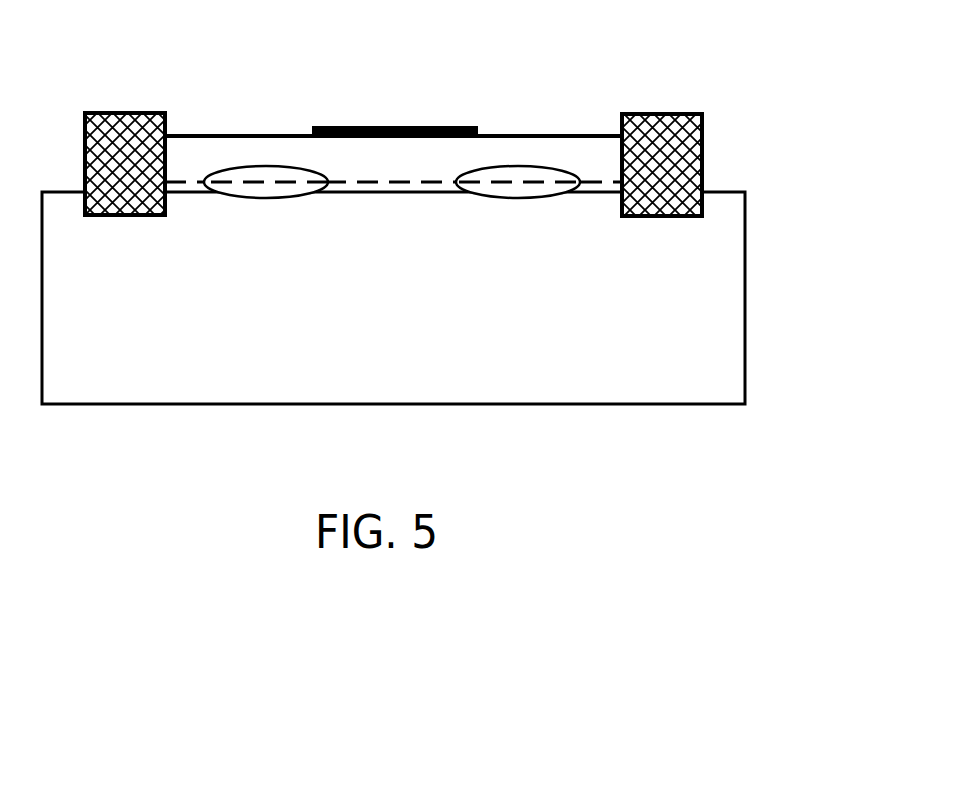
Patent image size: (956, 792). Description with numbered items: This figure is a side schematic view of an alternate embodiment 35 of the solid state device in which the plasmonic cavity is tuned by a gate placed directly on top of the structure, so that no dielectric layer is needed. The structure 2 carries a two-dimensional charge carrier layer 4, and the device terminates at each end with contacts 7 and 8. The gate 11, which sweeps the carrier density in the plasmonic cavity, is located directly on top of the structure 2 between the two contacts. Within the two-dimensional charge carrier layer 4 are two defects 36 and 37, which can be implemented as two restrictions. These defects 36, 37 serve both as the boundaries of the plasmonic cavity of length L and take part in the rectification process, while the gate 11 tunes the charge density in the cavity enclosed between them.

The structure 2 is at (132, 393).
The two-dimensional charge carrier layer 4 is at (395, 183).
The contact 7 is at (113, 133).
The contact 8 is at (655, 143).
The top gate 11 is at (398, 127).
The embodiment 35 is at (740, 120).
The defect 36 is at (260, 198).
The defect 37 is at (522, 198).